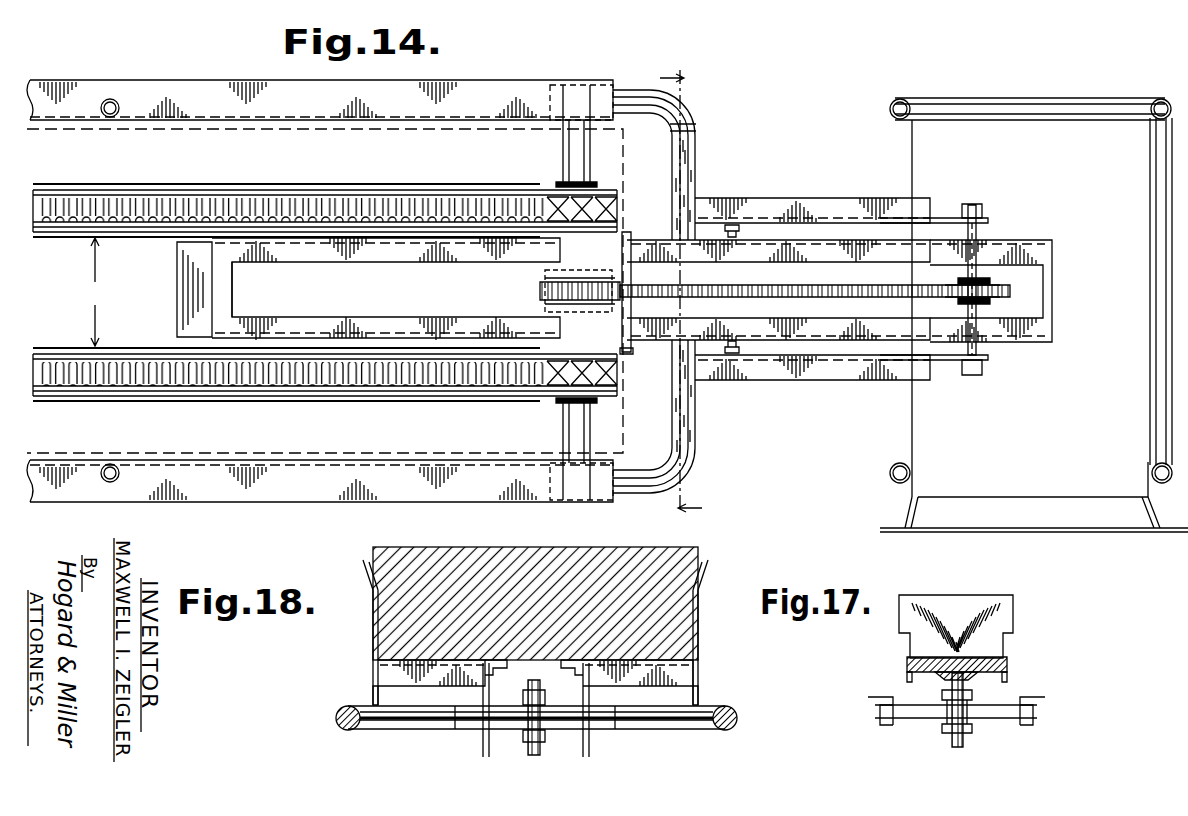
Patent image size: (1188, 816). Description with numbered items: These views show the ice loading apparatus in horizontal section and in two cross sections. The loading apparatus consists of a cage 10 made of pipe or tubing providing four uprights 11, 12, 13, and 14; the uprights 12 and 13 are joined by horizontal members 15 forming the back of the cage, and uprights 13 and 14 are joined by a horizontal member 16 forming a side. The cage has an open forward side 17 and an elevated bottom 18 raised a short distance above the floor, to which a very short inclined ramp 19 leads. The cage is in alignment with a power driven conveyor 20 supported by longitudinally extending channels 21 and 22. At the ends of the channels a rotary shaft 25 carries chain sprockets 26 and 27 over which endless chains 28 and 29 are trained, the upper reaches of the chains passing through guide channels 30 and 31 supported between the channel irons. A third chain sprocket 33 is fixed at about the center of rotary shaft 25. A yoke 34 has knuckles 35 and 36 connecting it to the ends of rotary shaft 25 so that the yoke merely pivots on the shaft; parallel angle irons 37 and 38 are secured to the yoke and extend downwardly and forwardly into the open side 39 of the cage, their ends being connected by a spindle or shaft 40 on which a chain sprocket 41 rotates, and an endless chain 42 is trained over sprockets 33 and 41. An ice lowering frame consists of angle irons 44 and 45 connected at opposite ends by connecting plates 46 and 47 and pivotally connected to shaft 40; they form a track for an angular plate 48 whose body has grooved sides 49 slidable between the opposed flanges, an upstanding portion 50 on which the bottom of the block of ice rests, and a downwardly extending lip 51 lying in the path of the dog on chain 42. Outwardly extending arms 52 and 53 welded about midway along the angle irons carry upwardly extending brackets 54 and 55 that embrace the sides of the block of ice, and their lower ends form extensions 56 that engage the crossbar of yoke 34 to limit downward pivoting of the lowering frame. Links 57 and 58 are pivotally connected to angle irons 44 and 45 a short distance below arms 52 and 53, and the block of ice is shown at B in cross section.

In FIG. 14, the cage 10 is at (989, 96).
In FIG. 14, the upright 11 is at (892, 470).
In FIG. 14, the upright 12 is at (893, 100).
In FIG. 14, the upright 13 is at (1158, 98).
In FIG. 14, the upright 14 is at (1150, 462).
In FIG. 14, the horizontal members 15 is at (1052, 100).
In FIG. 14, the horizontal member 16 is at (1160, 344).
In FIG. 14, the open forward side 17 is at (1100, 533).
In FIG. 14, the elevated bottom 18 is at (920, 534).
In FIG. 14, the inclined ramp 19 is at (1010, 512).
In FIG. 14, the power driven conveyor 20 is at (97, 292).
In FIG. 14, the longitudinally extending channel 21 is at (187, 92).
In FIG. 14, the longitudinally extending channel 22 is at (165, 485).
In FIG. 14, the rotary shaft 25 is at (572, 150).
In FIG. 14, the chain sprocket 26 is at (598, 192).
In FIG. 14, the chain sprocket 27 is at (591, 400).
In FIG. 14, the endless chain 28 is at (362, 190).
In FIG. 14, the endless chain 29 is at (343, 400).
In FIG. 14, the guide channel 30 is at (247, 184).
In FIG. 14, the guide channel 31 is at (218, 400).
In FIG. 14, the third chain sprocket 33 is at (545, 284).
In FIG. 14, the yoke 34 is at (690, 104).
In FIG. 18, the yoke 34 is at (345, 726).
In FIG. 14, the knuckle 35 is at (594, 92).
In FIG. 14, the knuckle 36 is at (556, 490).
In FIG. 14, the angle iron 37 is at (802, 212).
In FIG. 18, the angle iron 37 is at (457, 731).
In FIG. 17, the angle iron 37 is at (874, 706).
In FIG. 14, the angle iron 38 is at (810, 368).
In FIG. 18, the angle iron 38 is at (624, 731).
In FIG. 17, the angle iron 38 is at (1045, 712).
In FIG. 14, the open side 39 is at (912, 413).
In FIG. 14, the spindle or shaft 40 is at (977, 237).
In FIG. 17, the spindle or shaft 40 is at (932, 717).
In FIG. 14, the chain sprocket 41 is at (990, 299).
In FIG. 18, the chain sprocket 41 is at (546, 740).
In FIG. 17, the chain sprocket 41 is at (964, 730).
In FIG. 14, the endless chain 42 is at (826, 282).
In FIG. 18, the endless chain 42 is at (528, 748).
In FIG. 17, the endless chain 42 is at (953, 736).
In FIG. 14, the angle iron 44 is at (743, 248).
In FIG. 18, the angle iron 44 is at (495, 670).
In FIG. 17, the angle iron 44 is at (906, 668).
In FIG. 14, the angle iron 45 is at (741, 345).
In FIG. 18, the angle iron 45 is at (572, 670).
In FIG. 17, the angle iron 45 is at (1003, 664).
In FIG. 14, the connecting plate 46 is at (232, 298).
In FIG. 14, the connecting plate 47 is at (1050, 290).
In FIG. 14, the angular plate 48 is at (540, 304).
In FIG. 17, the angular plate 48 is at (1022, 631).
In FIG. 17, the groove 49 is at (910, 658).
In FIG. 17, the upstanding portion 50 is at (998, 612).
In FIG. 17, the downwardly extending lip 51 is at (946, 677).
In FIG. 14, the outwardly extending arm 52 is at (688, 172).
In FIG. 18, the outwardly extending arm 52 is at (390, 672).
In FIG. 14, the outwardly extending arm 53 is at (688, 413).
In FIG. 18, the outwardly extending arm 53 is at (666, 672).
In FIG. 14, the upwardly extending bracket 54 is at (696, 128).
In FIG. 18, the upwardly extending bracket 54 is at (370, 608).
In FIG. 14, the upwardly extending bracket 55 is at (696, 463).
In FIG. 18, the upwardly extending bracket 55 is at (700, 630).
In FIG. 18, the extension 56 is at (372, 700).
In FIG. 14, the link 57 is at (641, 236).
In FIG. 18, the link 57 is at (484, 740).
In FIG. 14, the link 58 is at (640, 345).
In FIG. 18, the link 58 is at (592, 742).
In FIG. 18, the block B is at (688, 568).